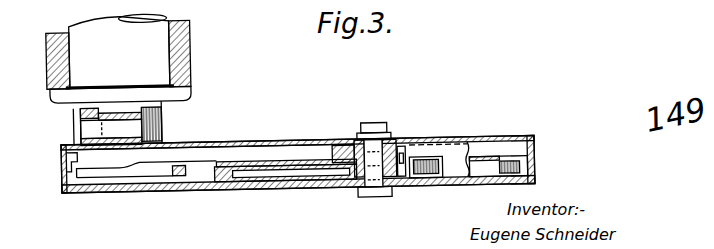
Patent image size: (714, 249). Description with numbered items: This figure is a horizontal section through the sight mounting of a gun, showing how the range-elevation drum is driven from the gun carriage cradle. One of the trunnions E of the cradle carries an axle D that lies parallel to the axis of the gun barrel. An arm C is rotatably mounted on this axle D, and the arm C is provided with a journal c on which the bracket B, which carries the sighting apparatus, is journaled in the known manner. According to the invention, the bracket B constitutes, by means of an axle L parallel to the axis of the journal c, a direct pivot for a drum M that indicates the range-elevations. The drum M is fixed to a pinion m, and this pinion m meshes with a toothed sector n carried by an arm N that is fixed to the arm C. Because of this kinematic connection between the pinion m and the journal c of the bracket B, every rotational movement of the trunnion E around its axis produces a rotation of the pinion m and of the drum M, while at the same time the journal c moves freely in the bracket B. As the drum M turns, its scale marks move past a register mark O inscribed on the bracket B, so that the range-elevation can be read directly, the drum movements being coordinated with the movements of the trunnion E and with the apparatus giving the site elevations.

The trunnion E is at (158, 53).
The axle D is at (167, 123).
The bracket B is at (67, 177).
The arm C is at (127, 156).
The journal c is at (148, 181).
The drum M is at (255, 172).
The arm N is at (275, 155).
The toothed sector n is at (338, 139).
The axle L is at (373, 150).
The pinion m is at (403, 153).
The register mark O is at (423, 158).